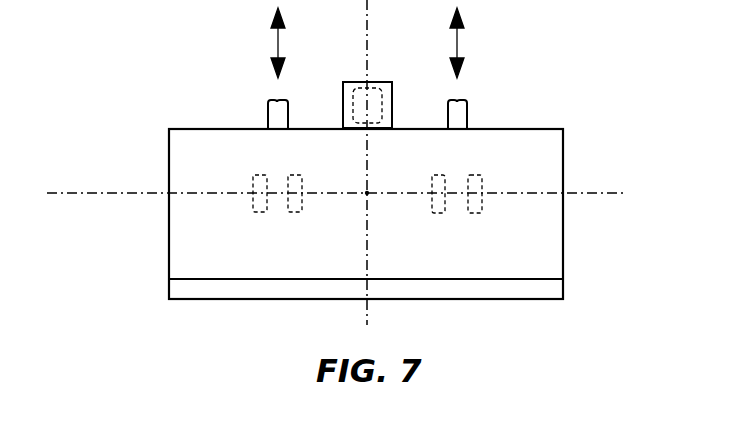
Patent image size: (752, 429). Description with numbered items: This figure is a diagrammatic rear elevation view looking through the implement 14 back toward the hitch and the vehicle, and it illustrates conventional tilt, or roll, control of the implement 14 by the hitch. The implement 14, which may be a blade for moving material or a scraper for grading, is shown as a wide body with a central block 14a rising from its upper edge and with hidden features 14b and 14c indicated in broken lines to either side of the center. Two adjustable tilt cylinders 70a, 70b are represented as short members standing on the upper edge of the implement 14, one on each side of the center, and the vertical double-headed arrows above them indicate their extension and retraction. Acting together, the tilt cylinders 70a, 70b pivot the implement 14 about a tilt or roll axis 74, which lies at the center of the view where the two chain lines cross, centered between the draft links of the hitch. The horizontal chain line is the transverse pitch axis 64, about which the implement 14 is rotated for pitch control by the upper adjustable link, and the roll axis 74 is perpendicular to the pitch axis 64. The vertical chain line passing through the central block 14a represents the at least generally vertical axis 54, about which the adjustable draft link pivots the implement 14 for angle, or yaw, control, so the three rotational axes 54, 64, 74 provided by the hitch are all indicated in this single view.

The implement 14 is at (565, 167).
The central projection / locating block 14a is at (343, 102).
The left dashed cavities 14b is at (258, 212).
The right dashed cavities 14c is at (475, 213).
The axis 54 is at (371, 32).
The transverse pitch axis 64 is at (105, 191).
The adjustable tilt cylinder 70a is at (267, 116).
The adjustable tilt cylinder 70b is at (469, 118).
The tilt (or roll) axis 74 is at (365, 197).